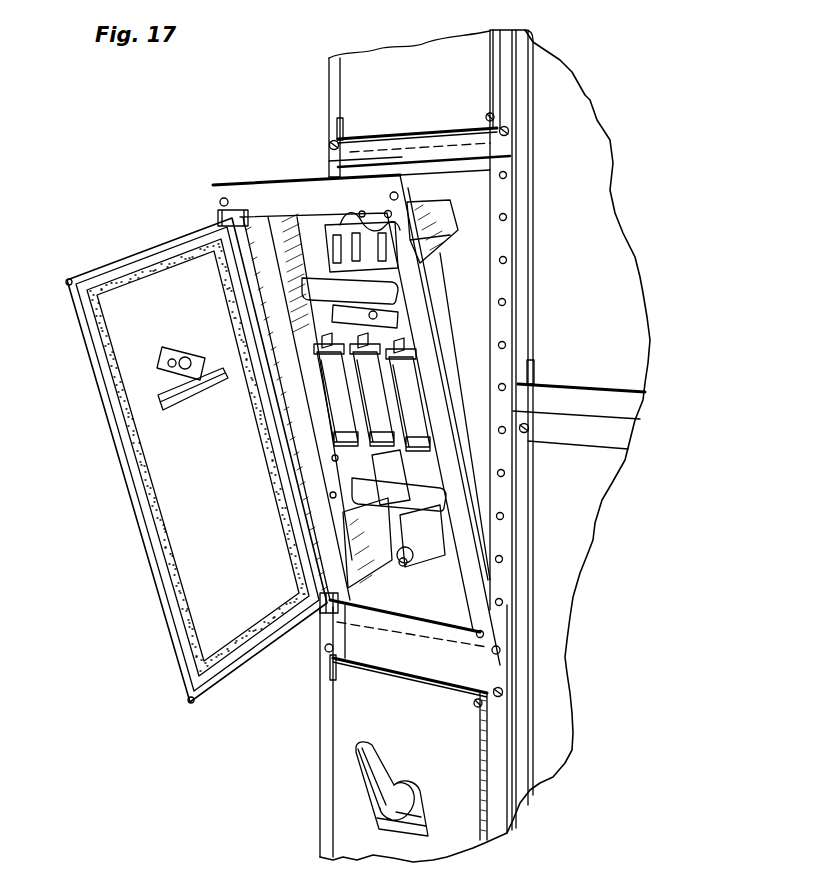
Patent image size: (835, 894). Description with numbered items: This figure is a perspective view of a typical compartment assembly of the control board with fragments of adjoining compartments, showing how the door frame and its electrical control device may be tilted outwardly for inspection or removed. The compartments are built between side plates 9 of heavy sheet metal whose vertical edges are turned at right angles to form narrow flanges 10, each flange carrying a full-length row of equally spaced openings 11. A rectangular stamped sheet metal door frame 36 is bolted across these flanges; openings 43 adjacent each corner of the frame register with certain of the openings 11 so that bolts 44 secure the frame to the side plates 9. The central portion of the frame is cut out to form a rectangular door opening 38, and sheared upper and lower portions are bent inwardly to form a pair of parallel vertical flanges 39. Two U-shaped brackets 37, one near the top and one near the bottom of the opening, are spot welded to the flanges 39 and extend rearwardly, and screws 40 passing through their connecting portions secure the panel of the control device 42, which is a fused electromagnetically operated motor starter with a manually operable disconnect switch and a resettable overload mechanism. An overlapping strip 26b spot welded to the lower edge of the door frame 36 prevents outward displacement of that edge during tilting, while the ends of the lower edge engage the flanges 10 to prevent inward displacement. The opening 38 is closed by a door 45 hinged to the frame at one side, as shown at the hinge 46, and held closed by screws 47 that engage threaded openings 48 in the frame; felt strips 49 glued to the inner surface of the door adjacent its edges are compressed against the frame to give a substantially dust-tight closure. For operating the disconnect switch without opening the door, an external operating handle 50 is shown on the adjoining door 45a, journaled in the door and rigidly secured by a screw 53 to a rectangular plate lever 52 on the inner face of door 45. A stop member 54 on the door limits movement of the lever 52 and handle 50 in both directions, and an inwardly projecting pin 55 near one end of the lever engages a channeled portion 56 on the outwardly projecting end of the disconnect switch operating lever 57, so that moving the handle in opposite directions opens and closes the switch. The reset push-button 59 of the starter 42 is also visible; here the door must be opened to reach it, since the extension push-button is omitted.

The side plate 9 is at (332, 172).
The flange 10 is at (503, 232).
The openings 11 is at (505, 302).
The door frame 36 is at (331, 58).
The overlapping strip 26b is at (420, 163).
The U-shaped bracket 37 is at (445, 215).
The door opening 38 is at (455, 580).
The vertical flange 39 is at (256, 185).
The screw 40 is at (357, 218).
The control device 42 is at (400, 400).
The opening 43 is at (224, 202).
The bolt 44 is at (334, 145).
The door 45 is at (197, 460).
The door 45a is at (340, 805).
The hinge 46 is at (218, 217).
The screw 47 is at (490, 117).
The threaded opening 48 is at (392, 215).
The strip of resilient material 49 is at (150, 538).
The external operating handle 50 is at (372, 768).
The lever 52 is at (172, 347).
The screw 53 is at (190, 358).
The stop member 54 is at (188, 405).
The pin 55 is at (168, 362).
The channeled portion 56 is at (360, 310).
The disconnect switch operating lever 57 is at (380, 315).
The reset push-button 59 is at (400, 565).